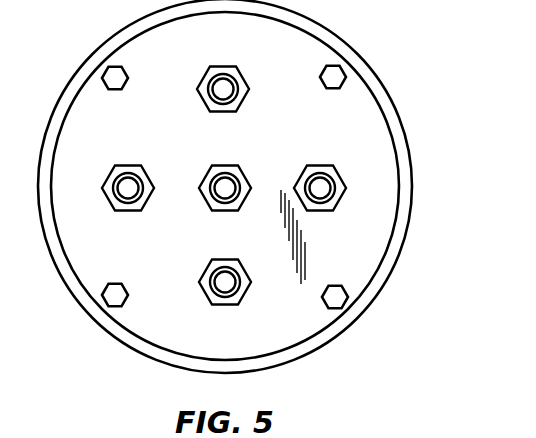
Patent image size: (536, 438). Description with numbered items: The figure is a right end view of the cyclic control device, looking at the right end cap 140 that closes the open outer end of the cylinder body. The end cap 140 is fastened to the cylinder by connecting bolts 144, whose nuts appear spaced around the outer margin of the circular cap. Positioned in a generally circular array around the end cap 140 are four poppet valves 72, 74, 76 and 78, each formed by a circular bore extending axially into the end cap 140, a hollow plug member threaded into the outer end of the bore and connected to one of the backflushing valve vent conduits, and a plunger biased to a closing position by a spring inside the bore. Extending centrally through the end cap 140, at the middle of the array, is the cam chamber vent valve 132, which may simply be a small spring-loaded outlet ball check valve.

The end cap 140 is at (172, 138).
The connecting bolts 144 is at (112, 70).
The poppet valve 72 is at (248, 100).
The poppet valve 74 is at (346, 168).
The poppet valve 76 is at (250, 297).
The poppet valve 78 is at (100, 181).
The cam chamber vent valve 132 is at (247, 160).